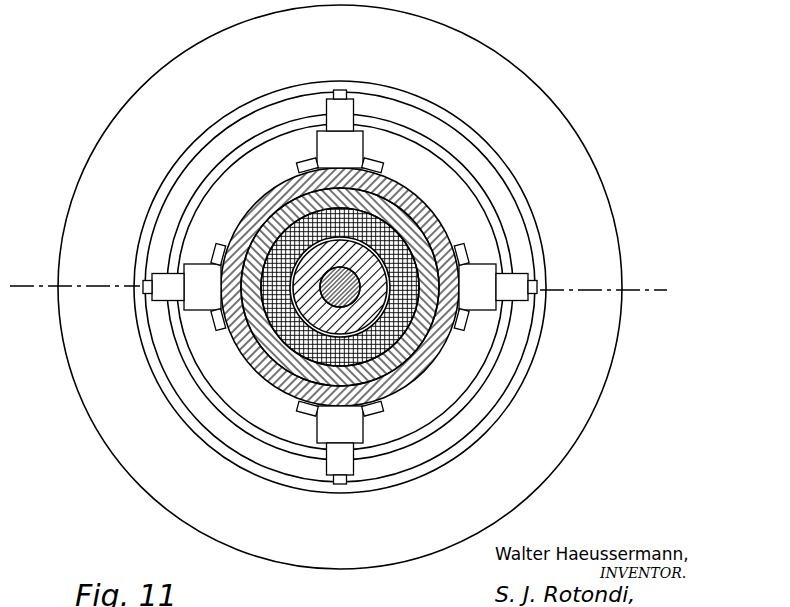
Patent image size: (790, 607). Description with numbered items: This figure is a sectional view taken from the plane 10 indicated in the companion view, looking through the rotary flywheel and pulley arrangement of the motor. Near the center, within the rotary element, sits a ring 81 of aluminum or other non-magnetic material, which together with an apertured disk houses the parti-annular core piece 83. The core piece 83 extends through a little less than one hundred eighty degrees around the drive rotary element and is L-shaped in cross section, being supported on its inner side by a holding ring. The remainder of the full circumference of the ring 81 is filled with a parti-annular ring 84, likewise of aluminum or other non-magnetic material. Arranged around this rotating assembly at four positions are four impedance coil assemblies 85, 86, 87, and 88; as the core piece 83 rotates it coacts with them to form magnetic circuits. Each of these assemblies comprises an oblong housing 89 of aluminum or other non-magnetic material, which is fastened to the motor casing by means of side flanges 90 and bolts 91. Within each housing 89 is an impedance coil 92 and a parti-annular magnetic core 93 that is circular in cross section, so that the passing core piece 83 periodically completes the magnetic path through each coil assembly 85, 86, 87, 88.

The section plane 10 is at (10, 286).
The ring 81 is at (491, 417).
The parti-annular core piece 83 is at (221, 423).
The parti-annular ring 84 is at (340, 292).
The impedance coil assembly 85 is at (206, 246).
The impedance coil assembly 86 is at (312, 142).
The impedance coil assembly 87 is at (482, 327).
The impedance coil assembly 88 is at (376, 429).
The oblong housing 89 is at (360, 139).
The side flanges 90 is at (300, 404).
The bolts 91 is at (305, 413).
The impedance coil 92 is at (357, 105).
The parti-annular magnetic core 93 is at (152, 290).